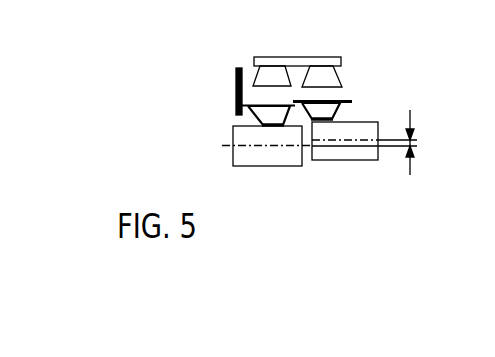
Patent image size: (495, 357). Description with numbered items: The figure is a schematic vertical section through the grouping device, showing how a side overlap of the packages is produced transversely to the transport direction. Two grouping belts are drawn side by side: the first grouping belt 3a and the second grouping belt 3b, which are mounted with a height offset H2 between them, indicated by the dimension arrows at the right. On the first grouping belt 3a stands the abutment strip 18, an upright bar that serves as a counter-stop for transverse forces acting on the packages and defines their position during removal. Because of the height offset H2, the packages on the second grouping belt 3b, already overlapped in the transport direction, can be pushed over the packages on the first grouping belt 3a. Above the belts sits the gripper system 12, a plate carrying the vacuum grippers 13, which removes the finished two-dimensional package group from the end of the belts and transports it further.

The gripper system 12 is at (298, 57).
The vacuum grippers 13 is at (342, 76).
The abutment strip 18 is at (236, 82).
The first grouping belt 3a is at (273, 166).
The second grouping belt 3b is at (352, 160).
The height offset H2 is at (418, 143).